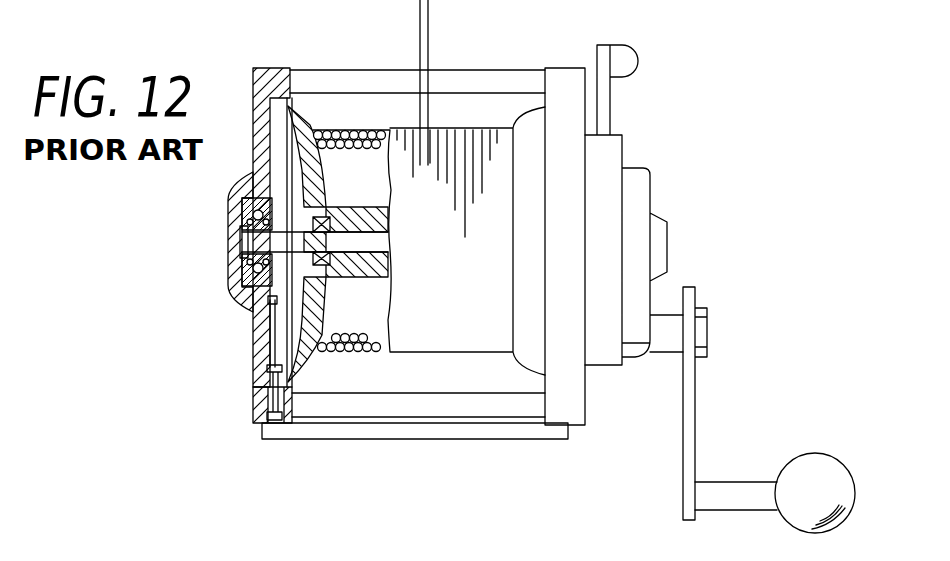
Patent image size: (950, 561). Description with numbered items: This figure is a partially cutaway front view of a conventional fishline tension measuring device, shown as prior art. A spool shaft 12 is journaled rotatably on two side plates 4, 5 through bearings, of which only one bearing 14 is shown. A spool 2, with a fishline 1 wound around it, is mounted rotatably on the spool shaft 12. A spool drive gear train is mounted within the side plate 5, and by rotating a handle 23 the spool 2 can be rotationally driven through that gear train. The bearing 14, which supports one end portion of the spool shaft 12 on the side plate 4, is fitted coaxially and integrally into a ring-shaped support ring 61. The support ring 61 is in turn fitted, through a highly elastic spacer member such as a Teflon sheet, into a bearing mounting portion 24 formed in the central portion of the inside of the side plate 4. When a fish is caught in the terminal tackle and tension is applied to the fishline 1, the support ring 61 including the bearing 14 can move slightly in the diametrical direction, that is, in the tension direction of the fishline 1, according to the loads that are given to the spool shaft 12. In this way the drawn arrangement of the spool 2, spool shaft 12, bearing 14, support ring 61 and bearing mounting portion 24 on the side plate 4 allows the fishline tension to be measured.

The fishline 1 is at (432, 31).
The spool 2 is at (306, 116).
The side plate 4 is at (253, 80).
The side plate 5 is at (570, 82).
The spool shaft 12 is at (365, 240).
The bearing 14 is at (240, 226).
The handle 23 is at (740, 492).
The bearing mounting portion 24 is at (228, 200).
The support ring 61 is at (240, 275).